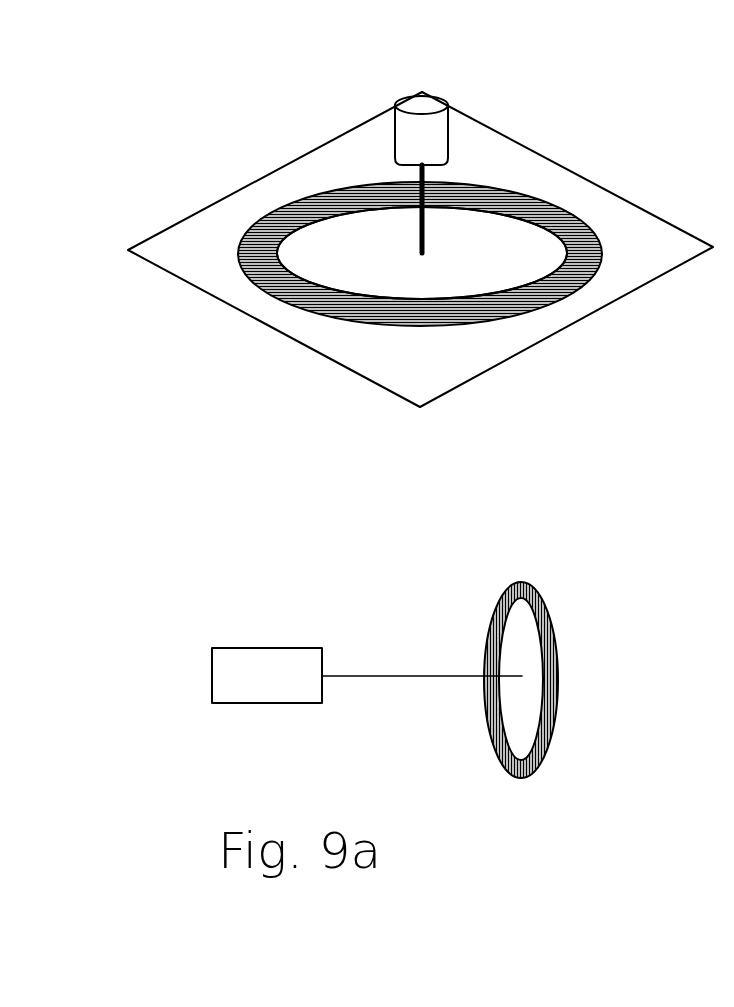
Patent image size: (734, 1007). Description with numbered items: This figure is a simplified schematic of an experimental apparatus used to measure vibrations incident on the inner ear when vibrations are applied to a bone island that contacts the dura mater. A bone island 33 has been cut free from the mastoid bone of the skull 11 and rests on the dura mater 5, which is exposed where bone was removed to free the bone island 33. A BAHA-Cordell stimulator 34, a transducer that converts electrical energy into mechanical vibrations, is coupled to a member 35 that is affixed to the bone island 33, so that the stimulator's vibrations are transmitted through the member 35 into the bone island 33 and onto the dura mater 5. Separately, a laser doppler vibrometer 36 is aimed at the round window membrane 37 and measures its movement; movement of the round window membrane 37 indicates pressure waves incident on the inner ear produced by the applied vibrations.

The skull 11 is at (192, 252).
The dura mater 5 is at (290, 224).
The bone island 33 is at (363, 239).
The BAHA-Cordell stimulator 34 is at (428, 142).
The member 35 is at (425, 222).
The laser doppler vibrometer 36 is at (263, 677).
The round window membrane 37 is at (513, 650).